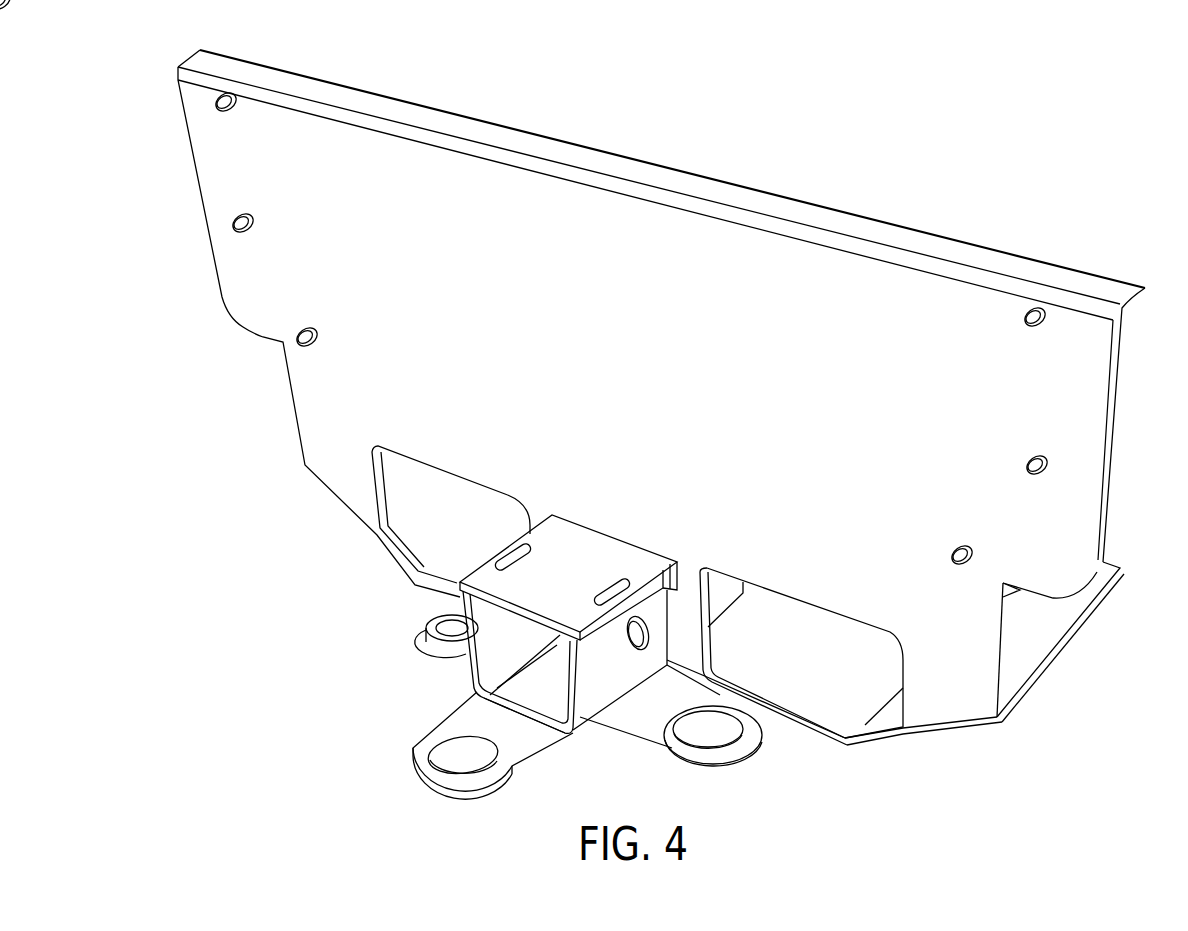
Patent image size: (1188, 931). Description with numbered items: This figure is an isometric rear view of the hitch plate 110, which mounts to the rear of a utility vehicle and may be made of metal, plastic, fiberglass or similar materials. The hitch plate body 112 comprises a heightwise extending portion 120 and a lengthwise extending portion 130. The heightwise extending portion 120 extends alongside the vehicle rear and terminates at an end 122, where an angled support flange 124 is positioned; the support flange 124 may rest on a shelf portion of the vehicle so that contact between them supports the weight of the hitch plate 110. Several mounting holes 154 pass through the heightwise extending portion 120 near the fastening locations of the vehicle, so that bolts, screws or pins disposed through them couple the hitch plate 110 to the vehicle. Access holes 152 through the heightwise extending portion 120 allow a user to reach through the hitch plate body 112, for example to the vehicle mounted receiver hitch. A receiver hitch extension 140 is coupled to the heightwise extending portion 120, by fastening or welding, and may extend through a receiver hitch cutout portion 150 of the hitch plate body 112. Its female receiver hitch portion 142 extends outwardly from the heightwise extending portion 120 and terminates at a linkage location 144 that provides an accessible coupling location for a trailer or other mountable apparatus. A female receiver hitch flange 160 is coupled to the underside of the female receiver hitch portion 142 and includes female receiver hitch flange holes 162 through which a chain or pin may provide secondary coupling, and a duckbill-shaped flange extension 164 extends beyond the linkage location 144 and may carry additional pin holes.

The hitch plate 110 is at (1008, 140).
The hitch plate body 112 is at (248, 304).
The heightwise extending portion 120 is at (438, 160).
The end of the heightwise extending portion 122 is at (612, 178).
The support flange 124 is at (812, 215).
The lengthwise extending portion 130 is at (813, 703).
The receiver hitch extension 140 is at (428, 672).
The female receiver hitch portion 142 is at (560, 578).
The linkage location 144 is at (543, 712).
The receiver hitch cutout portion 150 is at (670, 580).
The access holes 152 is at (418, 538).
The mounting holes 154 is at (232, 112).
The female receiver hitch flange 160 is at (647, 727).
The female receiver hitch flange holes 162 is at (722, 738).
The flange extension 164 is at (447, 798).